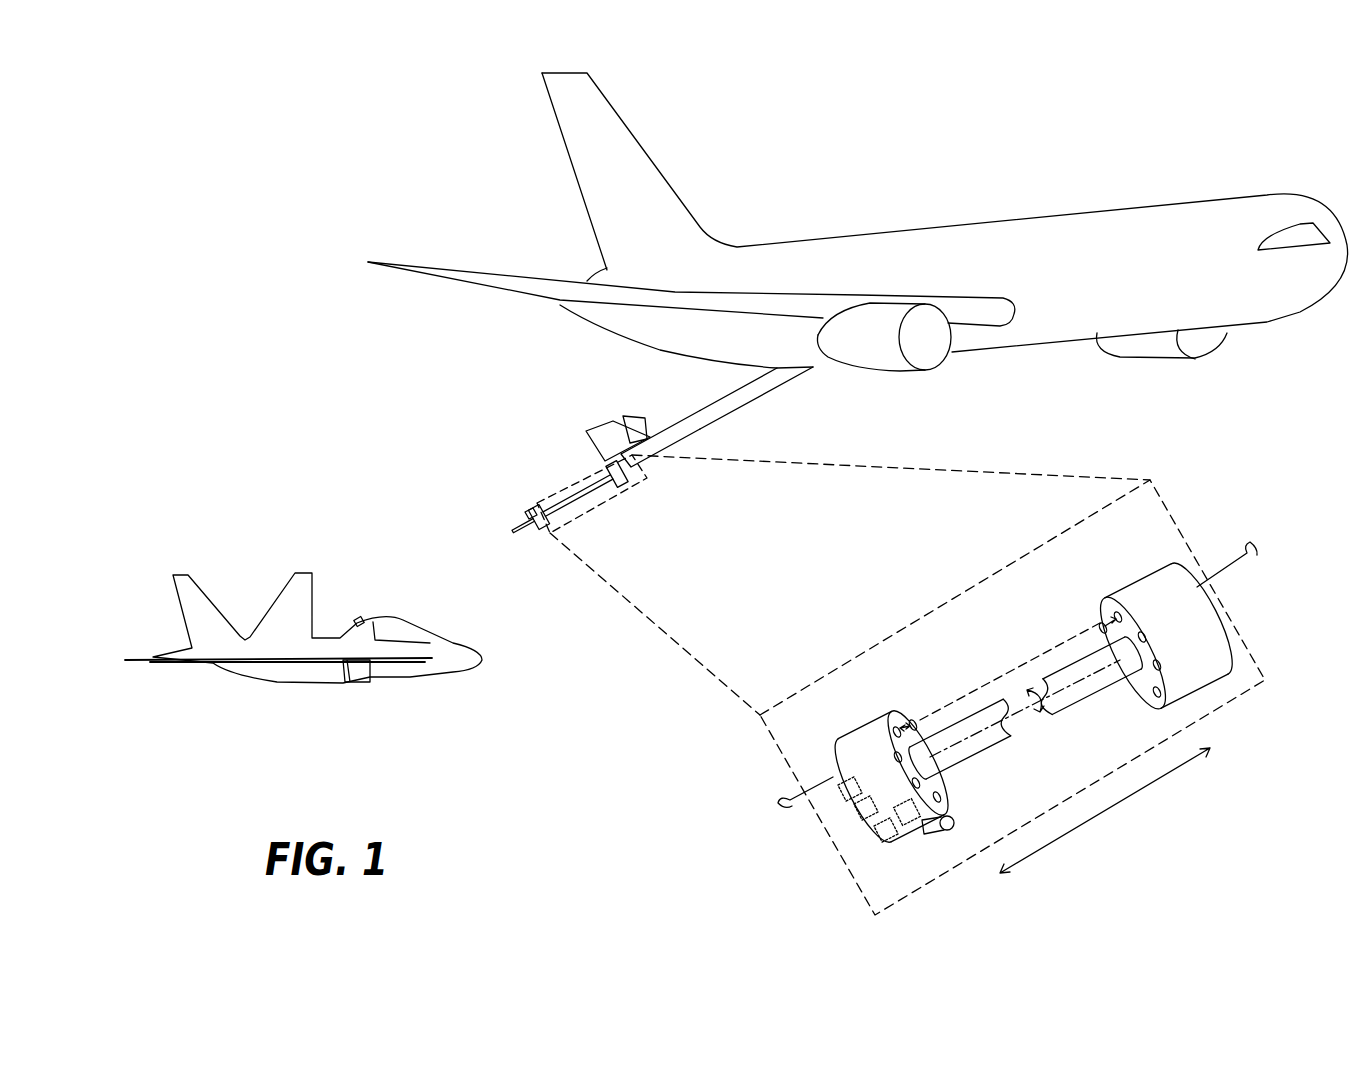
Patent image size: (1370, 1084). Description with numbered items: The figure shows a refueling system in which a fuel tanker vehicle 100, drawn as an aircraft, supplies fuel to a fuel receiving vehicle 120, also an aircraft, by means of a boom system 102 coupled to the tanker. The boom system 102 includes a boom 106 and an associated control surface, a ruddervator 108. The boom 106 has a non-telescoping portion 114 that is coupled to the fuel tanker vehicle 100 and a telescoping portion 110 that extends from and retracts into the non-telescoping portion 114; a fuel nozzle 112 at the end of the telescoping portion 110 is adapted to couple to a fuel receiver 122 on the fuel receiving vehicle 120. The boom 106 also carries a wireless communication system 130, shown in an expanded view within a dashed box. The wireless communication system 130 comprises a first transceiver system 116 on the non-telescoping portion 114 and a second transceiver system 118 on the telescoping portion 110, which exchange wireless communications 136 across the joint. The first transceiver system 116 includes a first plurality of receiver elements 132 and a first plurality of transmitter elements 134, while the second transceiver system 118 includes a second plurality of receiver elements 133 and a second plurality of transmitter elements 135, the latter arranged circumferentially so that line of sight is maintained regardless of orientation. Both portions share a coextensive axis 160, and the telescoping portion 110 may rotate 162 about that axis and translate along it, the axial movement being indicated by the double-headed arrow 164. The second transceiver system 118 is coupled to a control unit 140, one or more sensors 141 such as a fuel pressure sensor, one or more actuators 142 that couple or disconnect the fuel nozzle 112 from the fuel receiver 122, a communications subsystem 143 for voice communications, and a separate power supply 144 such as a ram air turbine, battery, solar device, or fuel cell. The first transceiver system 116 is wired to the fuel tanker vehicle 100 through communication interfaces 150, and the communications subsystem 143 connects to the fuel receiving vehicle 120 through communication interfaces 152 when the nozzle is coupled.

The fuel tanker vehicle 100 is at (1207, 198).
The boom system 102 is at (903, 411).
The boom 106 is at (793, 378).
The ruddervator 108 is at (635, 414).
The telescoping portion 110 is at (590, 473).
The fuel nozzle 112 is at (513, 537).
The non-telescoping portion 114 is at (680, 440).
The first transceiver system 116 is at (627, 480).
The second transceiver system 118 is at (550, 528).
The fuel receiving vehicle 120 is at (247, 678).
The fuel receiver 122 is at (360, 620).
The wireless communication system 130 is at (540, 505).
The first plurality of receiver elements 132 is at (1143, 635).
The second plurality of receiver elements 133 is at (895, 727).
The first plurality of transmitter elements 134 is at (1120, 615).
The second plurality of transmitter elements 135 is at (896, 757).
The wireless communications 136 is at (1053, 652).
The control unit 140 is at (875, 830).
The sensor 141 is at (858, 810).
The actuator 142 is at (840, 793).
The communications subsystem 143 is at (915, 822).
The power supply 144 is at (940, 830).
The communication interfaces 150 is at (1230, 567).
The communication interfaces 152 is at (793, 797).
The axis 160 is at (1020, 713).
The rotation 162 is at (1030, 700).
The axial direction 164 is at (1095, 815).